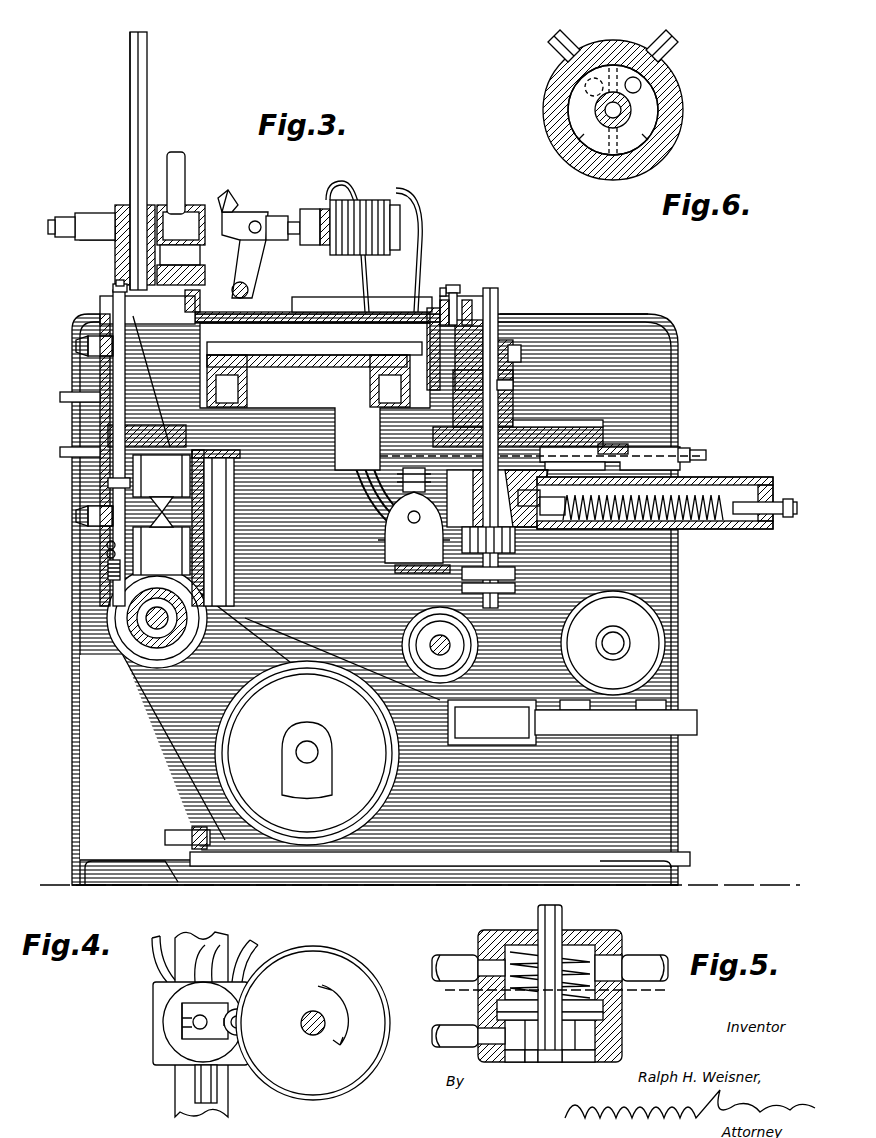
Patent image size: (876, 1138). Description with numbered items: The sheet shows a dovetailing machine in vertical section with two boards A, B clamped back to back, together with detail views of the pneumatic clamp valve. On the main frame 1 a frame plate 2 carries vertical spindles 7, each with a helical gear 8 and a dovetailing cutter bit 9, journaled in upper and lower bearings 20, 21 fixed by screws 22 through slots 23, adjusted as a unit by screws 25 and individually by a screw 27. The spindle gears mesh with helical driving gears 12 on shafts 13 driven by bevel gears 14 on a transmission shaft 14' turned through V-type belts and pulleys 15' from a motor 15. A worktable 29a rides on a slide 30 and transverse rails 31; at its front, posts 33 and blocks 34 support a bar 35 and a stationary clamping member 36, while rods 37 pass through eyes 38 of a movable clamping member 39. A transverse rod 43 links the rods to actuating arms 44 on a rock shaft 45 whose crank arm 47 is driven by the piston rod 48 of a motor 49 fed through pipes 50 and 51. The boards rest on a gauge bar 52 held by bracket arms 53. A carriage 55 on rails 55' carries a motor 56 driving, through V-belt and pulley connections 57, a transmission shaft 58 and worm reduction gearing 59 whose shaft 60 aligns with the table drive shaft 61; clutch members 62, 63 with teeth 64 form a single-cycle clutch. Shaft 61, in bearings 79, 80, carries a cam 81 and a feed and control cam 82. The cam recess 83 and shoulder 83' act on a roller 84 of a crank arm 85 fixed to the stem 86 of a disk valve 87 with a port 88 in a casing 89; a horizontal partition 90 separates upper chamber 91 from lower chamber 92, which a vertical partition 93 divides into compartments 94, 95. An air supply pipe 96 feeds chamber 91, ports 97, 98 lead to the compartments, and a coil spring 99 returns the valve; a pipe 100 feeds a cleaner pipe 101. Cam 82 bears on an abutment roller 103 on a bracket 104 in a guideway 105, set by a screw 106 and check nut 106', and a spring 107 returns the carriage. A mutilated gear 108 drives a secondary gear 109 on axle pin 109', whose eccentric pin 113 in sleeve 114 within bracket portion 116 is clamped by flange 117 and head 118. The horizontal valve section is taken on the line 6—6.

In FIG. 3, the main frame 1 is at (63, 611).
In FIG. 3, the frame plate 2 is at (100, 410).
In FIG. 3, the spindles 7 is at (115, 418).
In FIG. 3, the helical gear 8 is at (120, 450).
In FIG. 3, the dovetailing cutter bits 9 is at (116, 288).
In FIG. 3, the helical driving gears 12 is at (161, 476).
In FIG. 3, the shafts 13 is at (161, 536).
In FIG. 3, the bevel gears 14 is at (119, 618).
In FIG. 3, the transmission shaft 14' is at (268, 669).
In FIG. 3, the motor 15 is at (307, 753).
In FIG. 3, the V-type belts and pulleys 15' is at (203, 712).
In FIG. 3, the upper bearings 20 is at (110, 318).
In FIG. 3, the lower bearings 21 is at (108, 480).
In FIG. 3, the screws 22 is at (80, 345).
In FIG. 3, the slots 23 is at (92, 352).
In FIG. 3, the screws 25 is at (108, 542).
In FIG. 3, the screw 27 is at (112, 566).
In FIG. 3, the worktable 29a is at (296, 300).
In FIG. 3, the slide 30 is at (302, 360).
In FIG. 3, the transverse rails 31 is at (226, 368).
In FIG. 3, the posts 33 is at (186, 172).
In FIG. 3, the bearing and spacing blocks 34 is at (190, 220).
In FIG. 3, the transverse supporting bar 35 is at (226, 208).
In FIG. 3, the stationary work clamping member 36 is at (147, 210).
In FIG. 3, the rods 37 is at (55, 228).
In FIG. 3, the eyes 38 is at (76, 220).
In FIG. 3, the movable work clamping member 39 is at (110, 237).
In FIG. 3, the transverse rod 43 is at (240, 220).
In FIG. 3, the actuating arms 44 is at (232, 243).
In FIG. 3, the rock shaft 45 is at (250, 290).
In FIG. 3, the crank arm 47 is at (250, 268).
In FIG. 3, the piston rod 48 is at (278, 219).
In FIG. 3, the motor 49 is at (360, 205).
In FIG. 3, the pipe connection 50 is at (325, 205).
In FIG. 6, the pipe connection 50 is at (570, 42).
In FIG. 4, the pipe connection 50 is at (160, 960).
In FIG. 5, the pipe connection 50 is at (450, 1045).
In FIG. 3, the pipe connection 51 is at (410, 190).
In FIG. 6, the pipe connection 51 is at (658, 42).
In FIG. 4, the pipe connection 51 is at (250, 950).
In FIG. 3, the gauge bar 52 is at (178, 318).
In FIG. 3, the bracket arms 53 is at (113, 291).
In FIG. 3, the carriage 55 is at (401, 607).
In FIG. 3, the rails 55' is at (335, 481).
In FIG. 3, the motor 56 is at (652, 643).
In FIG. 3, the V-belt and pulley connections 57 is at (404, 662).
In FIG. 3, the transmission shaft 58 is at (412, 690).
In FIG. 3, the worm reduction gearing 59 is at (492, 722).
In FIG. 3, the shaft 60 is at (534, 728).
In FIG. 3, the table drive shaft 61 is at (497, 315).
In FIG. 4, the table drive shaft 61 is at (300, 1022).
In FIG. 3, the clutch member 62 is at (516, 588).
In FIG. 3, the clutch member 63 is at (516, 568).
In FIG. 3, the teeth 64 is at (440, 580).
In FIG. 3, the bearing 79 is at (500, 402).
In FIG. 3, the bearing 80 is at (516, 532).
In FIG. 3, the cam 81 is at (538, 492).
In FIG. 4, the cam 81 is at (350, 962).
In FIG. 3, the feed and control cam 82 is at (522, 425).
In FIG. 4, the cam recess 83 is at (259, 1012).
In FIG. 4, the shoulder 83' is at (257, 1039).
In FIG. 4, the roller 84 is at (244, 1009).
In FIG. 3, the crank arm 85 is at (403, 466).
In FIG. 4, the crank arm 85 is at (205, 1038).
In FIG. 4, the stem 86 is at (195, 1020).
In FIG. 5, the stem 86 is at (545, 920).
In FIG. 6, the rotatable disk valve 87 is at (655, 112).
In FIG. 5, the rotatable disk valve 87 is at (600, 1012).
In FIG. 6, the vertical port 88 is at (640, 85).
In FIG. 5, the vertical port 88 is at (600, 1000).
In FIG. 3, the casing 89 is at (395, 552).
In FIG. 6, the casing 89 is at (680, 140).
In FIG. 4, the casing 89 is at (153, 1022).
In FIG. 5, the casing 89 is at (612, 1025).
In FIG. 5, the horizontal partition 90 is at (590, 1032).
In FIG. 5, the upper chamber 91 is at (582, 950).
In FIG. 5, the lower chamber 92 is at (500, 1046).
In FIG. 6, the vertical partition 93 is at (605, 170).
In FIG. 5, the vertical partition 93 is at (552, 1062).
In FIG. 6, the compartment 94 is at (585, 128).
In FIG. 5, the compartment 94 is at (530, 1052).
In FIG. 6, the compartment 95 is at (675, 150).
In FIG. 5, the compartment 95 is at (578, 1052).
In FIG. 4, the air supply pipe 96 is at (215, 1090).
In FIG. 5, the air supply pipe 96 is at (648, 962).
In FIG. 6, the vertical port 97 is at (545, 110).
In FIG. 6, the vertical port 98 is at (648, 77).
In FIG. 5, the coil spring 99 is at (596, 960).
In FIG. 4, the pipe 100 is at (204, 936).
In FIG. 5, the pipe 100 is at (445, 958).
In FIG. 3, the cleaner or blast pipe 101 is at (147, 317).
In FIG. 3, the abutment roller 103 is at (580, 441).
In FIG. 3, the bracket 104 is at (576, 451).
In FIG. 3, the guideway 105 is at (640, 450).
In FIG. 3, the screw 106 is at (710, 437).
In FIG. 3, the check nut 106' is at (701, 427).
In FIG. 3, the spring 107 is at (690, 522).
In FIG. 3, the primary mutilated spur gear 108 is at (521, 353).
In FIG. 3, the secondary spur gear 109 is at (432, 279).
In FIG. 3, the axle pin 109' is at (519, 378).
In FIG. 3, the eccentric pin 113 is at (472, 310).
In FIG. 3, the eccentric sleeve 114 is at (516, 318).
In FIG. 3, the bracket portion 116 is at (472, 300).
In FIG. 3, the flange 117 is at (456, 294).
In FIG. 3, the head 118 is at (452, 286).
In FIG. 5, the section line 6 is at (555, 992).
In FIG. 3, the board A is at (130, 108).
In FIG. 3, the board B is at (147, 108).